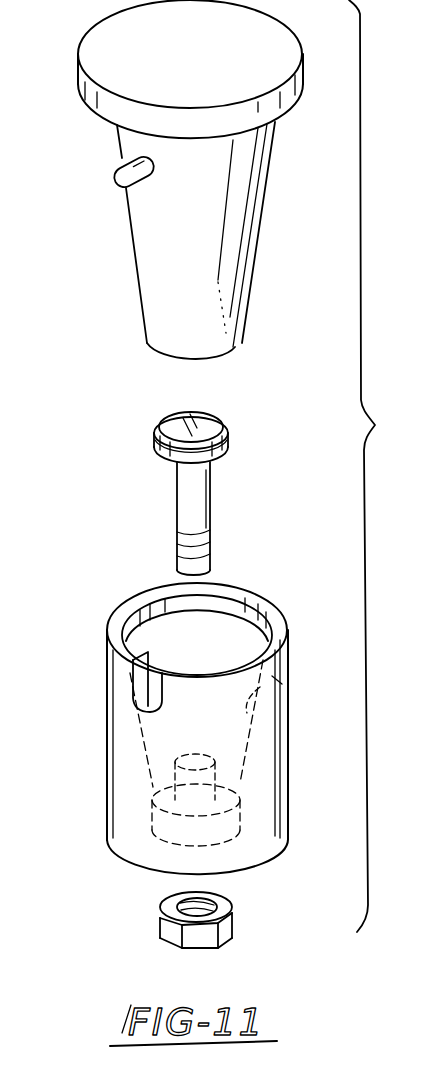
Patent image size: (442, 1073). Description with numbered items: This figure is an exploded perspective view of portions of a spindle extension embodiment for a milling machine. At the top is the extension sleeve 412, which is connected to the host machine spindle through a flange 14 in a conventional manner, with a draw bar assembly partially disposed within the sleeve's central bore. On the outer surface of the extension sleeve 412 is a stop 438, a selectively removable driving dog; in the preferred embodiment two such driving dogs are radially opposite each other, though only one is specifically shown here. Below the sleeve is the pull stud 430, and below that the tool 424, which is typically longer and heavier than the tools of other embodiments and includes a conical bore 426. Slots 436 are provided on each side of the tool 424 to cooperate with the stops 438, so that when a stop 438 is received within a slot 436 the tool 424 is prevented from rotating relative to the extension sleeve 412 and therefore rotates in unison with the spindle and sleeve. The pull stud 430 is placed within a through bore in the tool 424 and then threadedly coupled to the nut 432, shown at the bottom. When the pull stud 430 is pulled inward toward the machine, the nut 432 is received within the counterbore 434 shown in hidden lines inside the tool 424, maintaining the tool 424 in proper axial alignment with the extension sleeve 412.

The cap / puck 14 is at (80, 86).
The extension sleeve 412 is at (245, 265).
The stop 438 is at (116, 168).
The pull stud 430 is at (228, 440).
The tool 424 is at (118, 818).
The conical bore 426 is at (277, 680).
The slot 436 is at (140, 696).
The counterbore 434 is at (228, 840).
The nut 432 is at (160, 918).